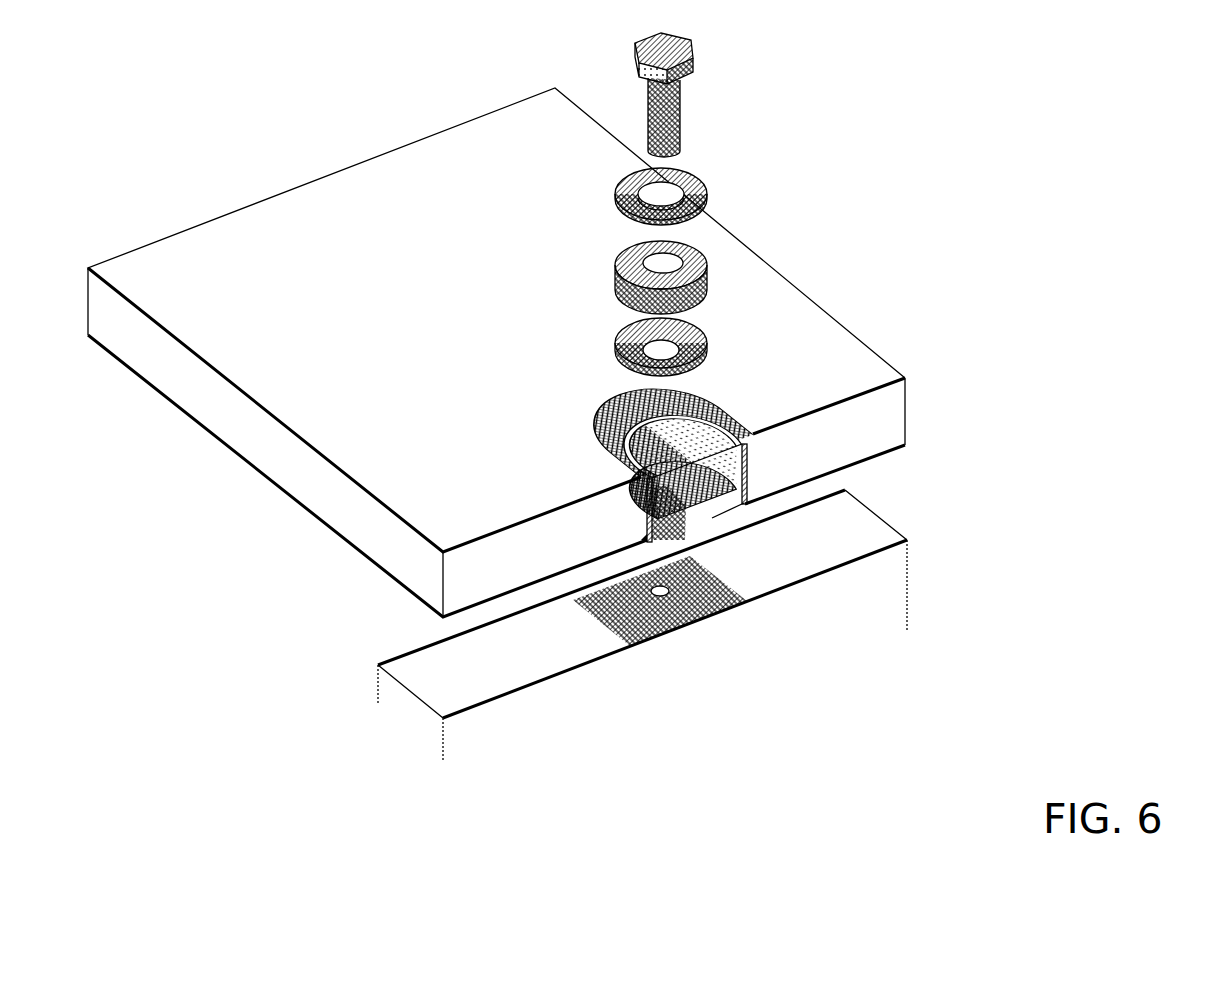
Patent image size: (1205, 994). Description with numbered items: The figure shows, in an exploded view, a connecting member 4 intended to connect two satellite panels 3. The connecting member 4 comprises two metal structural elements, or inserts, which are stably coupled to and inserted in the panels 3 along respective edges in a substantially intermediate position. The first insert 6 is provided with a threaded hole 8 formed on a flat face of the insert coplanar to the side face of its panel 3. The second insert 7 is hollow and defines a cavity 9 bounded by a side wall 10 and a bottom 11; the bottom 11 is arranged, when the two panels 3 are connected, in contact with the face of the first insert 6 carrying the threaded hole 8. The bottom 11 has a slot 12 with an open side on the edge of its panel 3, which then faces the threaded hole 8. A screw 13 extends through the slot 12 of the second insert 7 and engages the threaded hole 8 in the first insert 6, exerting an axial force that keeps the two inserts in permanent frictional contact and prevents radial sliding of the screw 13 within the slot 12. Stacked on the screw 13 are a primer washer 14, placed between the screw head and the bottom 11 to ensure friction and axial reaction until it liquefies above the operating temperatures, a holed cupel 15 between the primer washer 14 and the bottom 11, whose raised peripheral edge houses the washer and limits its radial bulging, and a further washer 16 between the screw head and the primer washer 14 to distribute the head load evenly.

The panel 3 is at (852, 354).
The connecting member 4 is at (556, 416).
The first insert 6 is at (696, 586).
The second insert 7 is at (626, 458).
The threaded hole 8 is at (658, 578).
The cavity 9 is at (712, 442).
The side wall 10 is at (700, 428).
The bottom 11 is at (722, 458).
The slot 12 is at (692, 523).
The screw 13 is at (675, 117).
The primer washer 14 is at (623, 254).
The holed cupel 15 is at (627, 373).
The further washer 16 is at (707, 190).